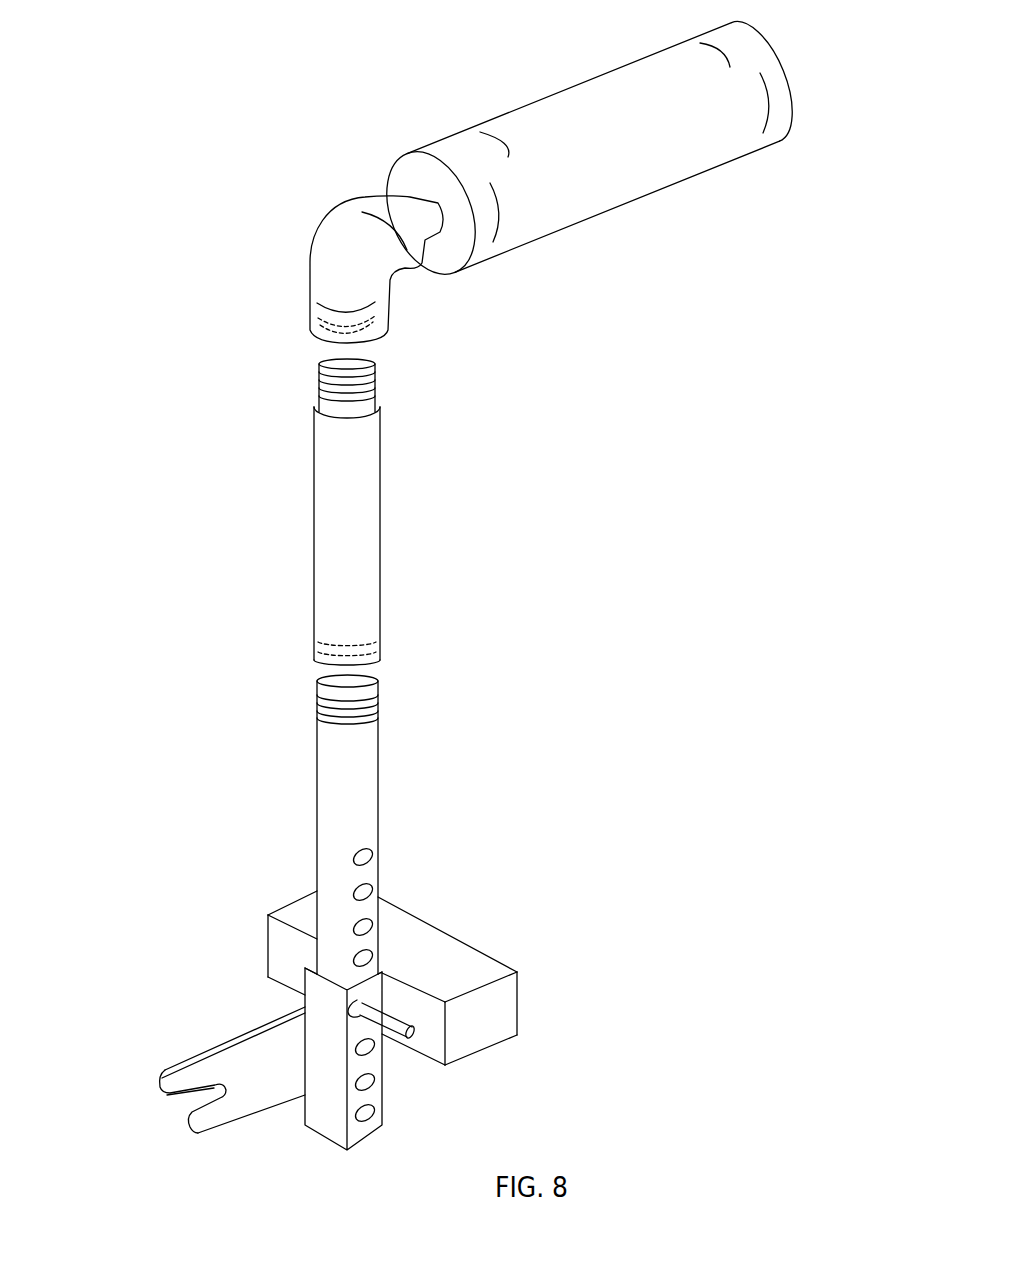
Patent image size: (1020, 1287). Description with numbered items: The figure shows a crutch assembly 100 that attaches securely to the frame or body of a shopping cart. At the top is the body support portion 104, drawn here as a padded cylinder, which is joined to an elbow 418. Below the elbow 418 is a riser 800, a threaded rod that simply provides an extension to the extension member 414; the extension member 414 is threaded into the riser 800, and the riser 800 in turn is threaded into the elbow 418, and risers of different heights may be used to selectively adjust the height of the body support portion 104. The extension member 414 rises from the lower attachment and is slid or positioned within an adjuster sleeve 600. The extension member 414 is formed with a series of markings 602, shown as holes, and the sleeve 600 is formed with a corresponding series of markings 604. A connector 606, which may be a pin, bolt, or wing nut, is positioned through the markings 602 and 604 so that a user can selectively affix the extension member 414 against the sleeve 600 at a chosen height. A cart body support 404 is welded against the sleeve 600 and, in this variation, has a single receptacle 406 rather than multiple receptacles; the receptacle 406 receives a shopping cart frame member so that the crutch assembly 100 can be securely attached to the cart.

The crutch assembly 100 is at (147, 158).
The body support portion 104 is at (657, 188).
The elbow 418 is at (353, 275).
The riser 800 is at (330, 548).
The extension member 414 is at (396, 824).
The markings 602 is at (363, 858).
The sleeve 600 is at (390, 1020).
The markings 604 is at (370, 1082).
The connector 606 is at (447, 1062).
The cart body support 404 is at (260, 1067).
The receptacle 406 is at (183, 1103).